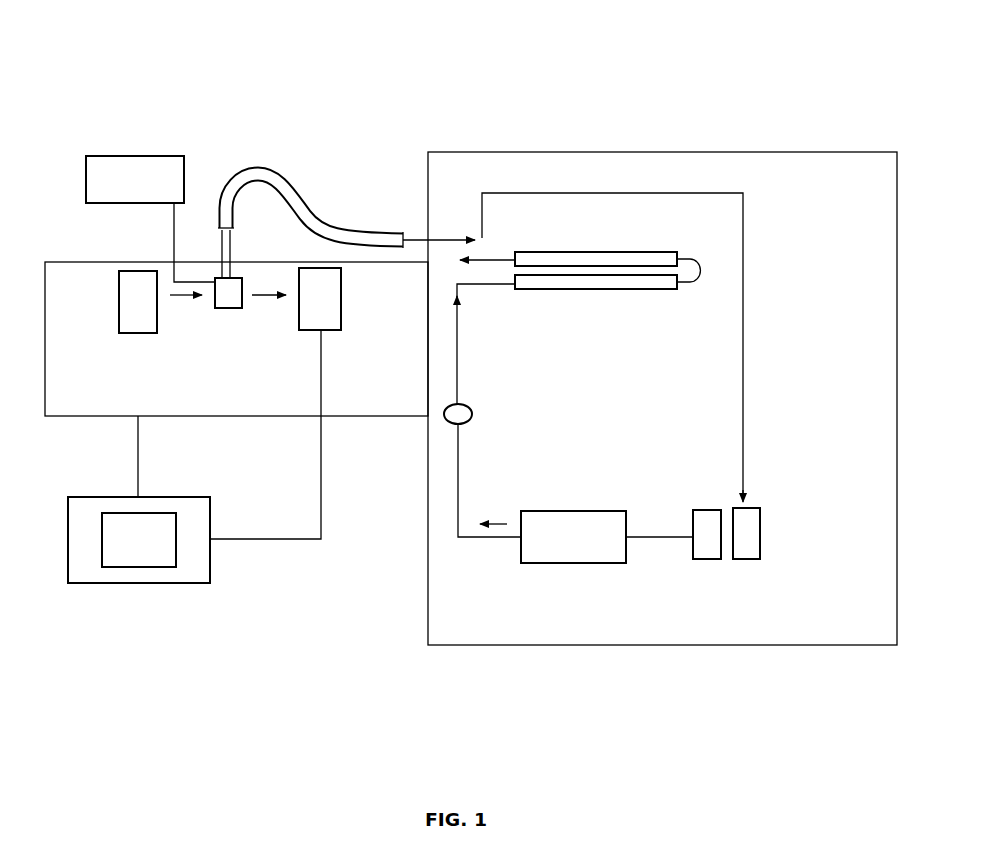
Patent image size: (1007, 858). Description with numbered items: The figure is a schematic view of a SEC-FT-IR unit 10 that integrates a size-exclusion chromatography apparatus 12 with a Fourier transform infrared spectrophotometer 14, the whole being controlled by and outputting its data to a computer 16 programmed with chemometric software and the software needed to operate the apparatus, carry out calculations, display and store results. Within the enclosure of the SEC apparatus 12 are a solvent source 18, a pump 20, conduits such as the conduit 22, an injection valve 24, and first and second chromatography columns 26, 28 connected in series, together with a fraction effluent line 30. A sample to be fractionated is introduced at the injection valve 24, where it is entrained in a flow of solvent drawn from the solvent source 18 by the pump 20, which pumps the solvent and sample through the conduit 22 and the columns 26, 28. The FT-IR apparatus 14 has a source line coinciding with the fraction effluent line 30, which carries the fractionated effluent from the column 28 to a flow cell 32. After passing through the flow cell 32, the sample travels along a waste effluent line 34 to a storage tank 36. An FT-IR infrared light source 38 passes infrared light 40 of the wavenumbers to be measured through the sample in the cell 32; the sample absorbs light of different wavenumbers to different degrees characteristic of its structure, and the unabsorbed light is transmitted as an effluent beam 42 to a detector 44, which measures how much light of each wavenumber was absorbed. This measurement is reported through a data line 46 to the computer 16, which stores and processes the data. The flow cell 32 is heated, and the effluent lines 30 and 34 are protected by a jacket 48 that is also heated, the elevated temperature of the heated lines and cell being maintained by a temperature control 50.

The SEC-FT-IR unit 10 is at (448, 52).
The size-exclusion chromatography apparatus 12 is at (668, 152).
The Fourier transform infrared spectrophotometer 14 is at (268, 416).
The computer 16 is at (173, 583).
The solvent source 18 is at (707, 509).
The pump 20 is at (553, 511).
The conduit 22 is at (459, 528).
The injection valve 24 is at (465, 405).
The first chromatography column 26 is at (665, 289).
The second chromatography column 28 is at (642, 251).
The fraction effluent line 30 is at (233, 247).
The flow cell 32 is at (222, 308).
The waste effluent line 34 is at (222, 242).
The storage tank 36 is at (760, 540).
The FT-IR infrared light source 38 is at (119, 321).
The infrared light 40 is at (178, 297).
The effluent beam 42 is at (267, 293).
The detector 44 is at (341, 313).
The data line 46 is at (273, 539).
The jacket 48 is at (317, 211).
The temperature control 50 is at (86, 175).